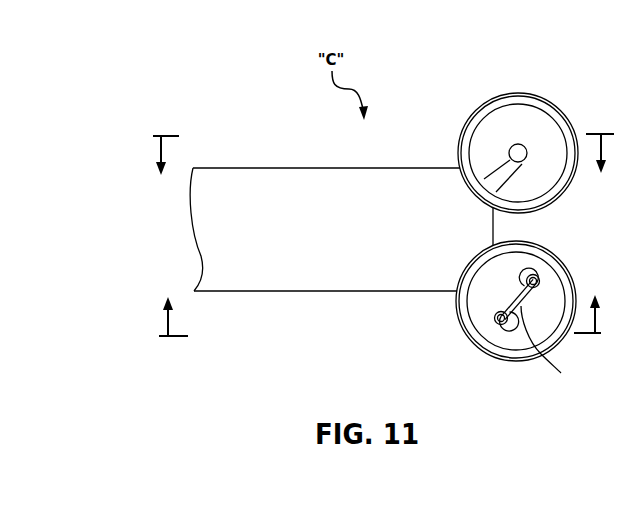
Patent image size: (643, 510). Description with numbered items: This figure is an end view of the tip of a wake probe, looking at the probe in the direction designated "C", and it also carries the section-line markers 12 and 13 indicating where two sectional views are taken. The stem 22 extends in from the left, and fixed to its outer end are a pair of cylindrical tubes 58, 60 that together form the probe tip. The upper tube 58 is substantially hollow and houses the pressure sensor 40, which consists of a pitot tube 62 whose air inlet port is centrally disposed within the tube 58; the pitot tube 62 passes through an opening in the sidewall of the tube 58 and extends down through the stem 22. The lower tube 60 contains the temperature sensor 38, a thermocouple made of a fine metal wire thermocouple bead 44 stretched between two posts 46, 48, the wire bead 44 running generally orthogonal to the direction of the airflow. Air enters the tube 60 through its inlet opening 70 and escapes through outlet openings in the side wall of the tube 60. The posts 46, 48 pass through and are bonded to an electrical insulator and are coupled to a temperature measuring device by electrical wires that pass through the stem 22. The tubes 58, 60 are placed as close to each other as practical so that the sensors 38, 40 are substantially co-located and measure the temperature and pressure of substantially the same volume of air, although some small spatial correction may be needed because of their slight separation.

The section line 12- 12 is at (380, 137).
The section line 13- 13 is at (382, 333).
The stem 22 is at (246, 188).
The temperature sensor 38 is at (570, 277).
The pressure sensor 40 is at (513, 104).
The thermocouple bead 44 is at (560, 372).
The post 46 is at (558, 280).
The post 48 is at (492, 320).
The cylindrical tube 58 is at (545, 111).
The cylindrical tube 60 is at (510, 349).
The pitot tube 62 is at (493, 166).
The inlet opening 70 is at (478, 291).